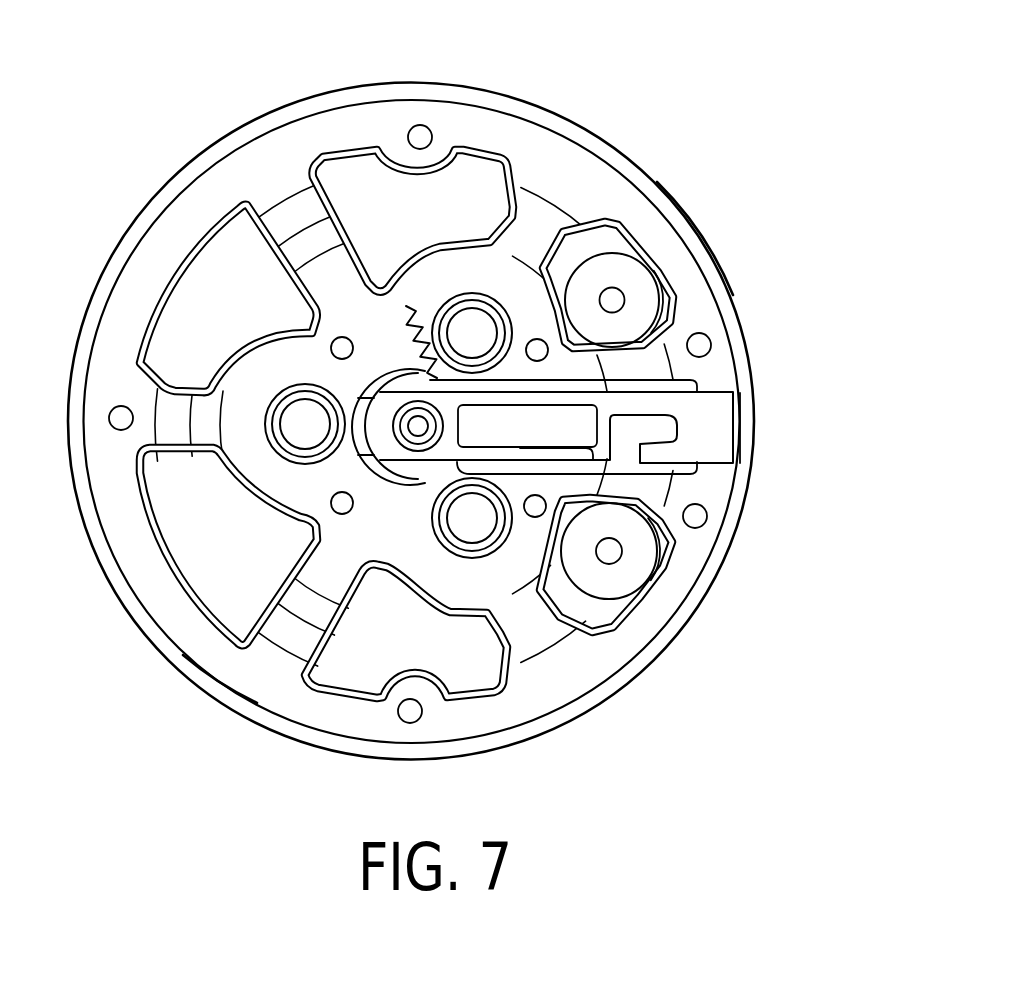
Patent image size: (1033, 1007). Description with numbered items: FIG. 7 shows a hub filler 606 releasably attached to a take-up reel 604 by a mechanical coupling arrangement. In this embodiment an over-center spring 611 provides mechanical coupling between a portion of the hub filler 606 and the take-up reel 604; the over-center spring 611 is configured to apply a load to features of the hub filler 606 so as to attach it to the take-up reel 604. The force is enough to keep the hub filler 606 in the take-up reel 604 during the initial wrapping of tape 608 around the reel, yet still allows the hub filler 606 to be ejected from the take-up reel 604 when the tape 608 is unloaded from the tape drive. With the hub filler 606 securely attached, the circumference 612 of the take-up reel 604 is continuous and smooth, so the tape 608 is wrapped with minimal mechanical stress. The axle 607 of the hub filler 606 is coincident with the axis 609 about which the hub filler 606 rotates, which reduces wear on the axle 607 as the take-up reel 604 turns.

The take-up reel 604 is at (585, 175).
The hub filler 606 is at (698, 430).
The axle 607 is at (415, 430).
The axis 609 is at (633, 787).
The tape 608 is at (733, 295).
The over-center spring 611 is at (414, 303).
The circumference 612 is at (257, 703).